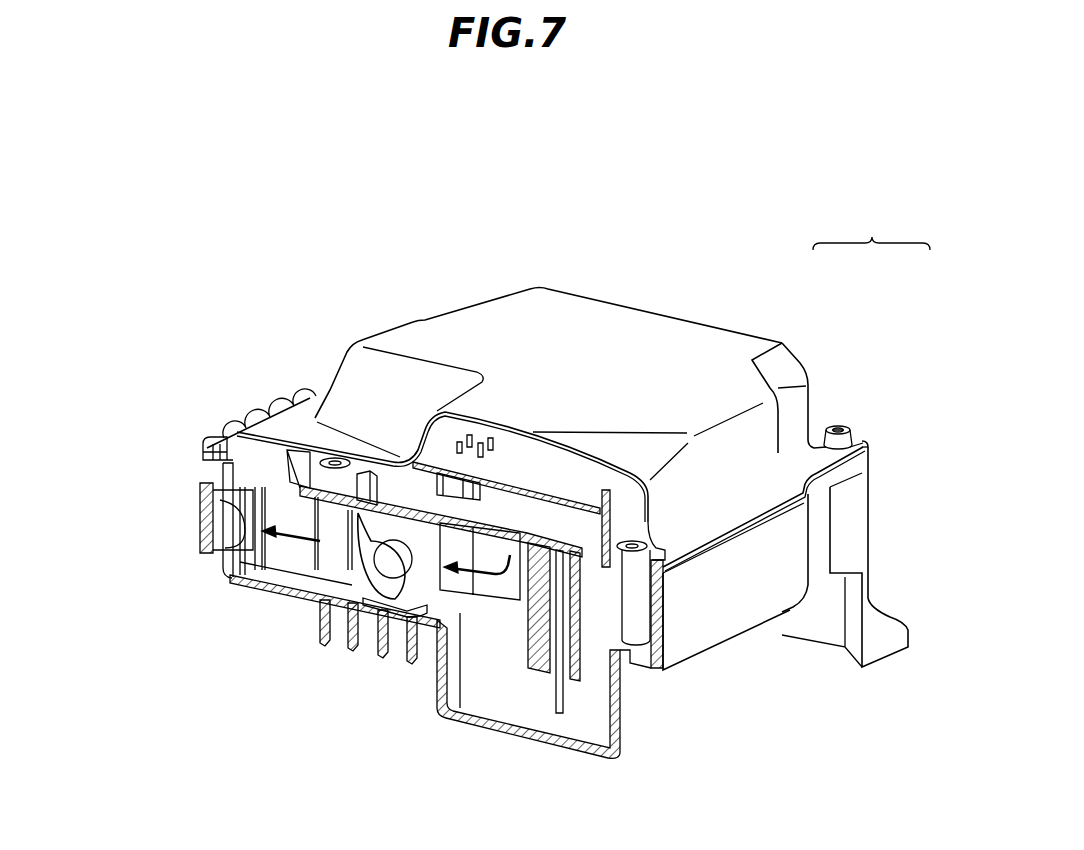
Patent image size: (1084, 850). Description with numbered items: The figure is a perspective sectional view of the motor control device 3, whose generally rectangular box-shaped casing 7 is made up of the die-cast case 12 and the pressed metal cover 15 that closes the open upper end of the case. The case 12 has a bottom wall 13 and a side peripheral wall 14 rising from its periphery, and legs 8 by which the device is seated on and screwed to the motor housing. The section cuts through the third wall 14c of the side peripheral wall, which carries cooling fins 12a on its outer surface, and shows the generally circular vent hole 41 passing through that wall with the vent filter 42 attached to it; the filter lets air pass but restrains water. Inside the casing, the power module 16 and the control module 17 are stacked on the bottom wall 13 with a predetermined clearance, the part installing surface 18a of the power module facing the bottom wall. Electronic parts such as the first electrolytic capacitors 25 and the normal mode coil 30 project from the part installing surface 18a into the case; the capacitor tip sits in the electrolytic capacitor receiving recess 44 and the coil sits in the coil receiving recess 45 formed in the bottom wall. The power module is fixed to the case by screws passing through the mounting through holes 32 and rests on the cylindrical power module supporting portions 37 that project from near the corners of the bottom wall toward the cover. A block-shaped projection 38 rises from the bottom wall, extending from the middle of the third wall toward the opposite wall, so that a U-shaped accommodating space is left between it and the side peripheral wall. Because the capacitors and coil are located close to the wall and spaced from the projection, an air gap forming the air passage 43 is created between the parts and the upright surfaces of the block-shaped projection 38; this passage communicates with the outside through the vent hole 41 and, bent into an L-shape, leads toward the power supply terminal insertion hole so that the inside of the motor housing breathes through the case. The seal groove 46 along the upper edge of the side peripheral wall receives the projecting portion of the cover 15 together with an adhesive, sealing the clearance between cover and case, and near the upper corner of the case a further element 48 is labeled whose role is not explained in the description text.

The motor control device 3 is at (523, 230).
The casing 7 is at (871, 229).
The legs 8 is at (877, 647).
The case 12 is at (860, 503).
The cooling fins 12a is at (222, 440).
The bottom wall 13 is at (265, 578).
The side peripheral wall 14 is at (692, 618).
The third wall 14c is at (233, 562).
The cover 15 is at (748, 326).
The power module 16 is at (308, 500).
The control module 17 is at (539, 505).
The part installing surface 18a is at (472, 500).
The first electrolytic capacitors 25 is at (527, 652).
The normal mode coil 30 is at (393, 560).
The mounting through holes 32 is at (336, 460).
The power module supporting portions 37 is at (640, 632).
The block-shaped projection 38 is at (290, 493).
The vent hole 41 is at (243, 553).
The vent filter 42 is at (202, 520).
The air passage 43 is at (476, 592).
The electrolytic capacitor receiving recess 44 is at (586, 712).
The coil receiving recess 45 is at (388, 618).
The seal groove 46 is at (205, 458).
The screw boss 48 is at (840, 426).